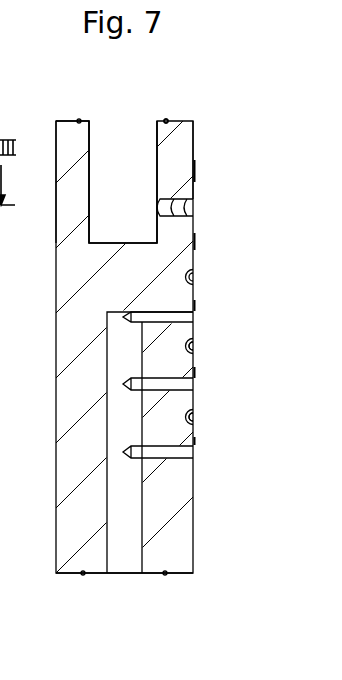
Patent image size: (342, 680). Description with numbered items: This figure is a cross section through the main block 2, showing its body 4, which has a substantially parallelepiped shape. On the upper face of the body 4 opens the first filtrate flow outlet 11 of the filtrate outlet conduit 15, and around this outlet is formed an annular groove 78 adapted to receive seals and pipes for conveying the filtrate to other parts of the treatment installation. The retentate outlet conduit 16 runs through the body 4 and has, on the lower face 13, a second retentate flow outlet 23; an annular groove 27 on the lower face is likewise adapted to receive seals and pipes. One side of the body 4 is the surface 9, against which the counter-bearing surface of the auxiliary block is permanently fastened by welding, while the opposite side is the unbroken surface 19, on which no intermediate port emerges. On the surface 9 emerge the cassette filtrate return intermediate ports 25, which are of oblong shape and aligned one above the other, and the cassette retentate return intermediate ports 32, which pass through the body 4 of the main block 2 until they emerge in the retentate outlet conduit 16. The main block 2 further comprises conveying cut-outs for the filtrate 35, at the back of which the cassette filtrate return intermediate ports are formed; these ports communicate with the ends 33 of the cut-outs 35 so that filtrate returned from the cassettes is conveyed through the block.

The main block 2 is at (66, 120).
The body 4 is at (78, 283).
The surface 9 is at (203, 131).
The first filtrate flow outlet 11 is at (110, 121).
The lower face 13 is at (76, 584).
The filtrate outlet conduit 15 is at (140, 130).
The retentate outlet conduit 16 is at (138, 530).
The unbroken surface 19 is at (47, 131).
The second retentate flow outlet 23 is at (122, 575).
The cassette filtrate return intermediate port 25 is at (205, 207).
The annular groove 27 is at (166, 575).
The cassette retentate return intermediate port 32 is at (197, 315).
The end of the cut-out for conveying the filtrate 33 is at (205, 350).
The conveying cut-out for the filtrate 35 is at (196, 277).
The annular groove 78 is at (166, 118).